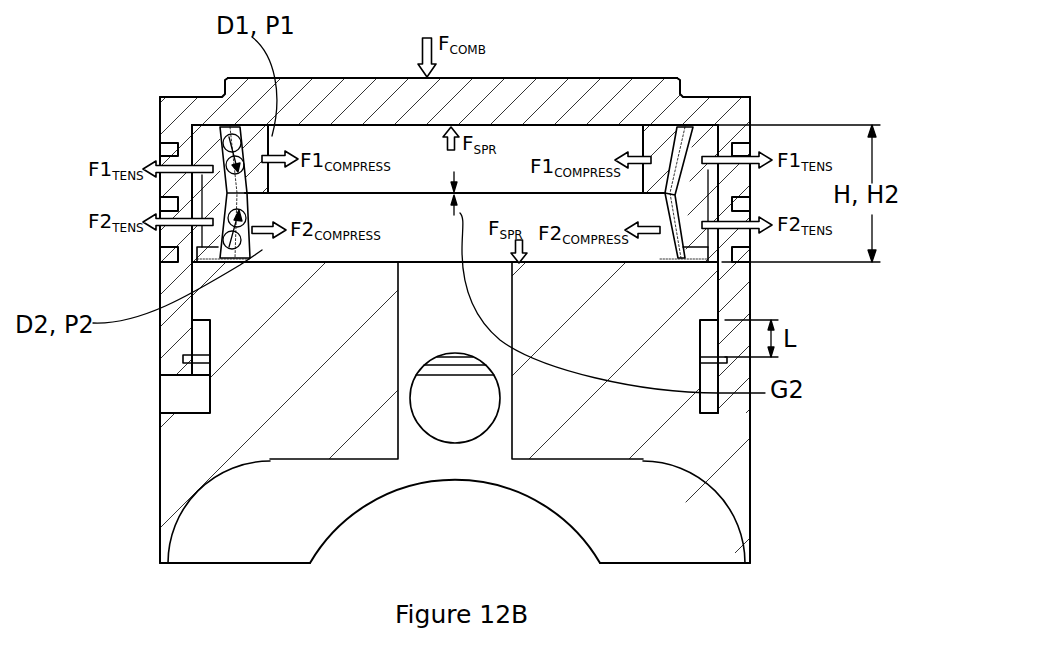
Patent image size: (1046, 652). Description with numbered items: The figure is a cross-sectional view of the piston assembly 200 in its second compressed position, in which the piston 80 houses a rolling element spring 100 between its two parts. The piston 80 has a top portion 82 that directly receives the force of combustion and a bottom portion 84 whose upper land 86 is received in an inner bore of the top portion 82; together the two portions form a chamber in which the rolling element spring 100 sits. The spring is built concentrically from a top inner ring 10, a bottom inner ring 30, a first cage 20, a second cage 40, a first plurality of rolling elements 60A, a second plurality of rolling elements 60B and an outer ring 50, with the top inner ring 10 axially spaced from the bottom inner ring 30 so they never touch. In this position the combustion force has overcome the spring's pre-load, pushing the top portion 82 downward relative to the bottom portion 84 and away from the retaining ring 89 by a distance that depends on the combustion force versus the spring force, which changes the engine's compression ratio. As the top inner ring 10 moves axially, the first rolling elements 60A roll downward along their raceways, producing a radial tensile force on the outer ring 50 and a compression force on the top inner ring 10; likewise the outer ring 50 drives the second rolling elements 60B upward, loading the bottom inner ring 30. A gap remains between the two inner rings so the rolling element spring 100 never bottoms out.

The piston assembly 200 is at (157, 73).
The rolling element spring 100 is at (715, 123).
The piston 80 is at (588, 76).
The top portion 82 is at (362, 87).
The upper land 86 is at (305, 133).
The bottom portion 84 is at (177, 448).
The outer ring 50 is at (200, 133).
The first cage 20 is at (685, 135).
The top inner ring 10 is at (253, 133).
The first plurality of rolling elements 60A is at (270, 135).
The second plurality of rolling elements 60B is at (250, 265).
The bottom inner ring 30 is at (205, 258).
The second cage 40 is at (690, 263).
The retaining ring 89 is at (185, 359).